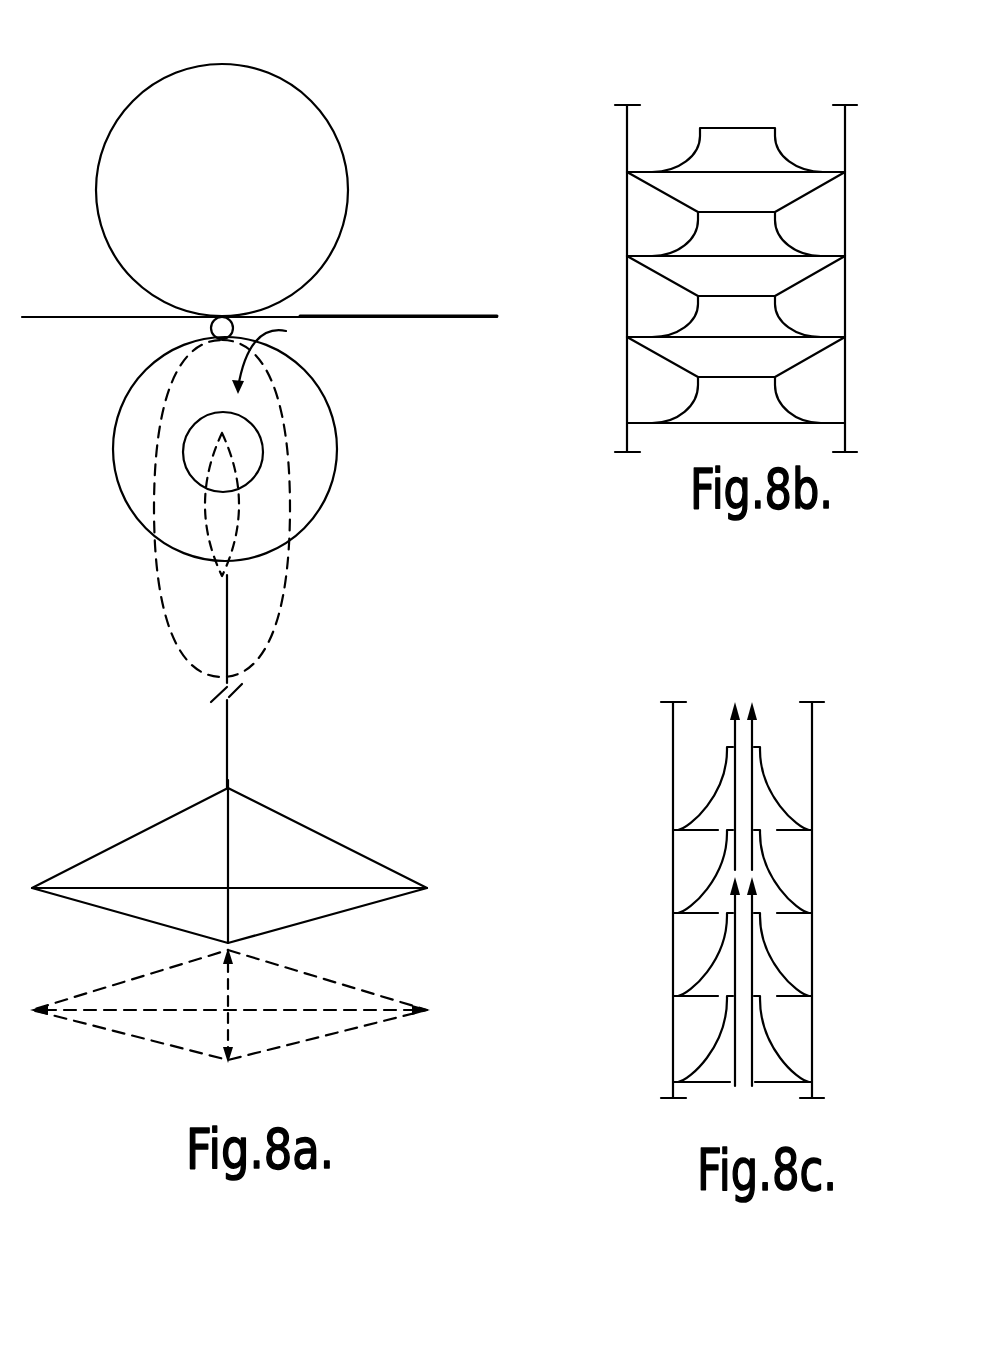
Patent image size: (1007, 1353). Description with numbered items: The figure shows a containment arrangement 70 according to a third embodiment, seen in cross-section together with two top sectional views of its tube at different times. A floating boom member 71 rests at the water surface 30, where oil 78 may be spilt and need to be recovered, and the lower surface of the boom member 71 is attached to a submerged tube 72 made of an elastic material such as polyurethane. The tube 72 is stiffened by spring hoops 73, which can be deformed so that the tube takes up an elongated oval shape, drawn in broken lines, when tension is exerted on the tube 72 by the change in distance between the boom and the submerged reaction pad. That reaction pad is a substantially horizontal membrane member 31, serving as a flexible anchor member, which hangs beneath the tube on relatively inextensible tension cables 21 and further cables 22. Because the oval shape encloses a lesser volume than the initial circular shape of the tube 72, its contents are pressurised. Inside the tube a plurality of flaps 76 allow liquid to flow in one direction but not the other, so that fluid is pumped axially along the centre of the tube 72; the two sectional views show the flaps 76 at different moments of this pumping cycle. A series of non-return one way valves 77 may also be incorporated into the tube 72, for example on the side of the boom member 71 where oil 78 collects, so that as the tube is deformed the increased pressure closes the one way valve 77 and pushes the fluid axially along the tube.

In FIG. 8A, the containment arrangement 70 is at (334, 70).
In FIG. 8A, the boom member 71 is at (327, 213).
In FIG. 8A, the surface line 30 is at (87, 316).
In FIG. 8A, the oil 78 is at (463, 316).
In FIG. 8A, the submerged tube 72 is at (257, 508).
In FIG. 8B, the submerged tube 72 is at (765, 278).
In FIG. 8C, the submerged tube 72 is at (775, 900).
In FIG. 8A, the spring hoops 73 is at (313, 515).
In FIG. 8A, the flaps 76 is at (160, 503).
In FIG. 8B, the flaps 76 is at (807, 325).
In FIG. 8C, the flaps 76 is at (777, 800).
In FIG. 8A, the one way valves 77 is at (265, 354).
In FIG. 8A, the tension cables 21 is at (228, 743).
In FIG. 8A, the further cables 22 is at (325, 835).
In FIG. 8A, the membrane member 31 is at (276, 888).